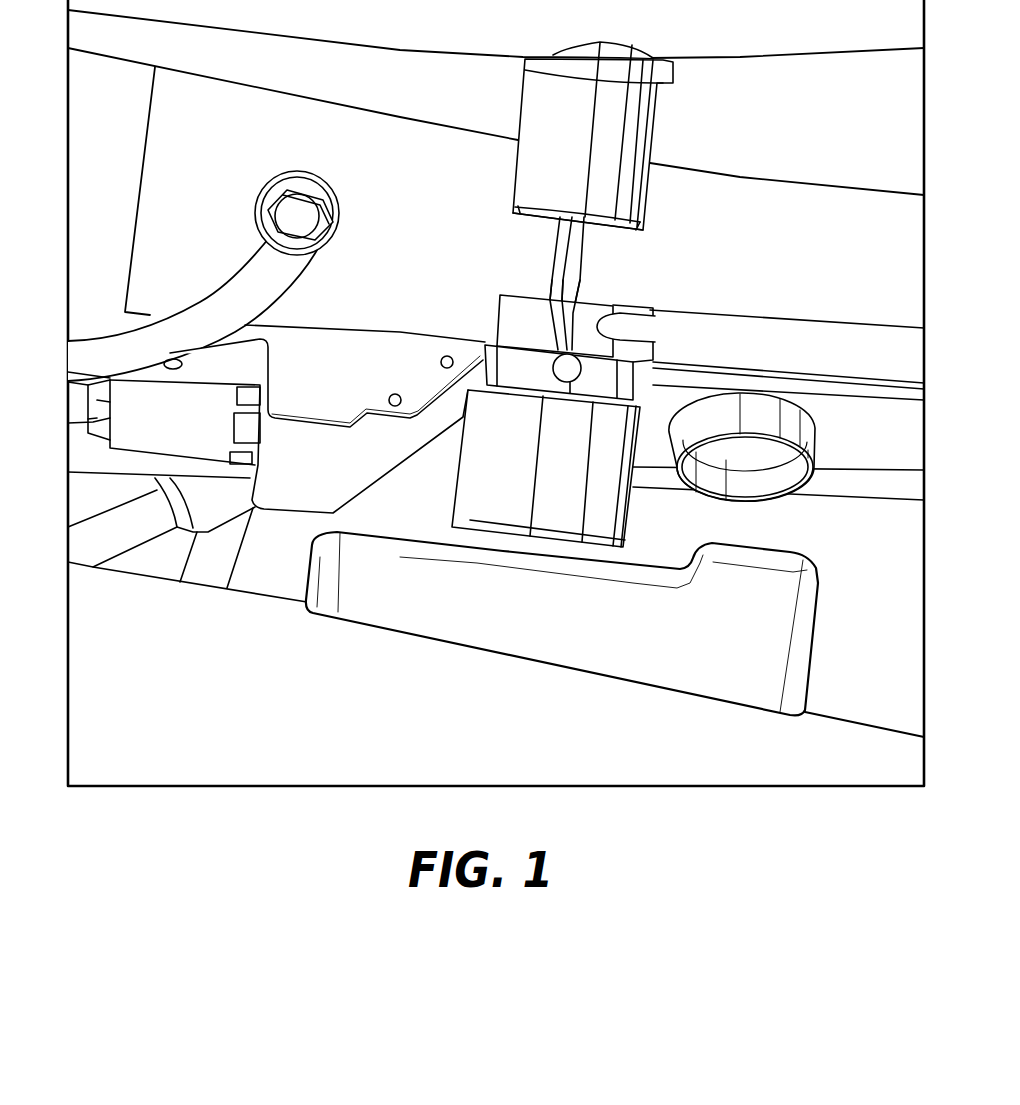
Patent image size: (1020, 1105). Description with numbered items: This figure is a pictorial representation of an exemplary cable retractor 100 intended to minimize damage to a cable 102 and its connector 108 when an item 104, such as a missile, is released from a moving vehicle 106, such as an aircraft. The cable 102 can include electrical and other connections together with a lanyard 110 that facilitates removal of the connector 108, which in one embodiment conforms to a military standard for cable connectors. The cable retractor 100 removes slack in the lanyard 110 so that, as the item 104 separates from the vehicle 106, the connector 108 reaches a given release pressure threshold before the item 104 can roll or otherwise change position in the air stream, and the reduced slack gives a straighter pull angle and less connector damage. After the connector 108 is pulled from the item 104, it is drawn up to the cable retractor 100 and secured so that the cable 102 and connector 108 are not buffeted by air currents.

The cable retractor 100 is at (495, 168).
The cable 102 is at (785, 332).
The item 104 is at (247, 706).
The vehicle 106 is at (832, 244).
The connector 108 is at (513, 318).
The lanyard 110 is at (553, 248).